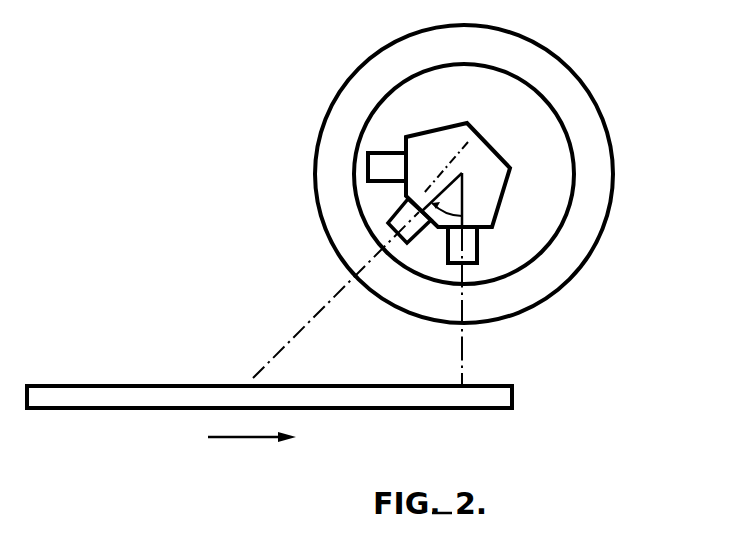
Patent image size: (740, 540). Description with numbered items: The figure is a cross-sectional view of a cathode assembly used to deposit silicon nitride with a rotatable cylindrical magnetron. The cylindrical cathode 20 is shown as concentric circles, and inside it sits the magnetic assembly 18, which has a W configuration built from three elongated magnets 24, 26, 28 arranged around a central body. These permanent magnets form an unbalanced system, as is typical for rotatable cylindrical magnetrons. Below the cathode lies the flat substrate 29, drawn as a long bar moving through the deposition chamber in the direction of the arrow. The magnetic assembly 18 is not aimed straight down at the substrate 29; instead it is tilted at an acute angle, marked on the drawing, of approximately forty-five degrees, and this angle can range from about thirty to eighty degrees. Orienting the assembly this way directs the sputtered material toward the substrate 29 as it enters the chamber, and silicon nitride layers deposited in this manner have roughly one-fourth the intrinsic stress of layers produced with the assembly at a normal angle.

The magnetic assembly 18 is at (505, 198).
The cathode 20 is at (585, 145).
The elongated magnet 24 is at (382, 158).
The elongated magnet 26 is at (405, 199).
The elongated magnet 28 is at (471, 264).
The substrate 29 is at (100, 393).